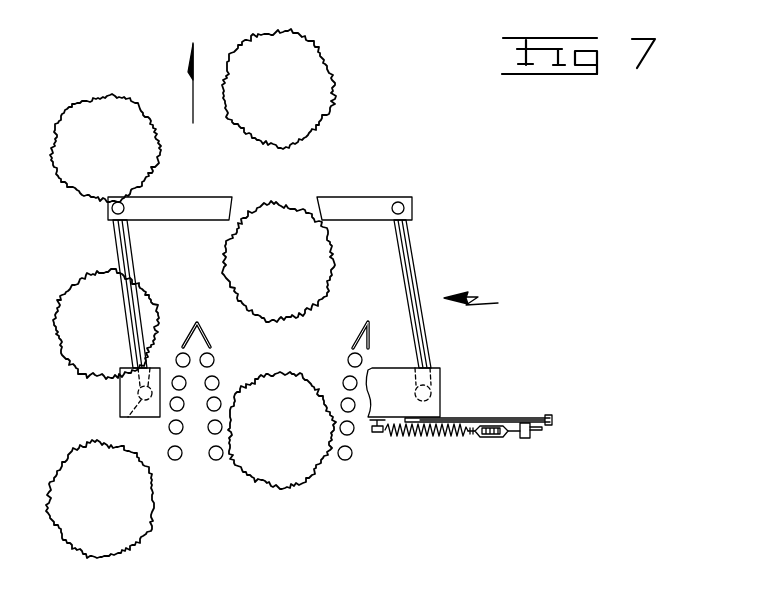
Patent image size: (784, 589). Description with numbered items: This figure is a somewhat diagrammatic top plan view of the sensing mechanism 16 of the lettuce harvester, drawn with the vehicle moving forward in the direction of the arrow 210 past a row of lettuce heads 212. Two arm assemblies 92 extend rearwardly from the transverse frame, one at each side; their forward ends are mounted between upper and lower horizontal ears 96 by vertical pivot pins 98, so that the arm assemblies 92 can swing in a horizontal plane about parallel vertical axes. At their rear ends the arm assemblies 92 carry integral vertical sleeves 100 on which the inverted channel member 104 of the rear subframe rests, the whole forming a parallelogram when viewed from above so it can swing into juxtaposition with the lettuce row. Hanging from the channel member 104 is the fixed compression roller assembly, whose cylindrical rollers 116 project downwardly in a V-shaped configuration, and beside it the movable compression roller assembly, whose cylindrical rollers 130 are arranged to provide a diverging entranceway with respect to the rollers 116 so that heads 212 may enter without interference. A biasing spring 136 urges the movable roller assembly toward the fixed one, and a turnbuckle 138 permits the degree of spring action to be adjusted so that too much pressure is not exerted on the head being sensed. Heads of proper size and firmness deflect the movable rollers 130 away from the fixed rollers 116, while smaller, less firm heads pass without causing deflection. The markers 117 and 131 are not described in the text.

The sensing mechanism 16 is at (484, 302).
The arm assemblies 92 is at (135, 269).
The horizontal ears 96 is at (183, 207).
The vertical pivot pins 98 is at (398, 202).
The vertical sleeves 100 is at (126, 417).
The inverted channel member 104 is at (120, 393).
The cylindrical rollers 116 is at (175, 460).
The marker 117 is at (184, 345).
The cylindrical rollers 130 is at (347, 460).
The marker 131 is at (373, 322).
The biasing spring 136 is at (432, 437).
The turnbuckle 138 is at (488, 438).
The arrow 210 is at (192, 96).
The head of lettuce 212 is at (88, 97).